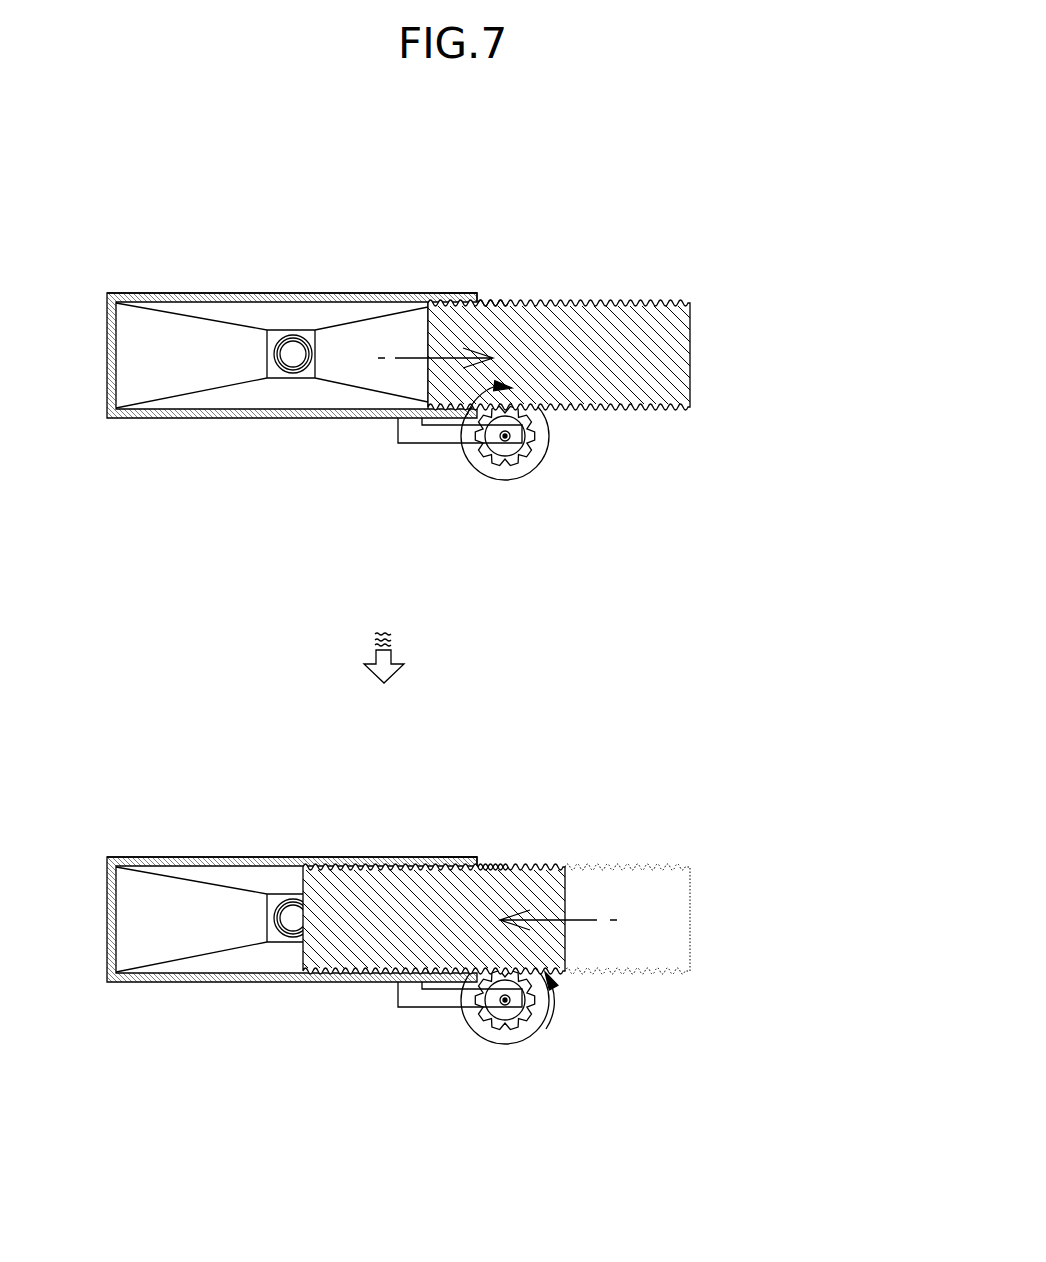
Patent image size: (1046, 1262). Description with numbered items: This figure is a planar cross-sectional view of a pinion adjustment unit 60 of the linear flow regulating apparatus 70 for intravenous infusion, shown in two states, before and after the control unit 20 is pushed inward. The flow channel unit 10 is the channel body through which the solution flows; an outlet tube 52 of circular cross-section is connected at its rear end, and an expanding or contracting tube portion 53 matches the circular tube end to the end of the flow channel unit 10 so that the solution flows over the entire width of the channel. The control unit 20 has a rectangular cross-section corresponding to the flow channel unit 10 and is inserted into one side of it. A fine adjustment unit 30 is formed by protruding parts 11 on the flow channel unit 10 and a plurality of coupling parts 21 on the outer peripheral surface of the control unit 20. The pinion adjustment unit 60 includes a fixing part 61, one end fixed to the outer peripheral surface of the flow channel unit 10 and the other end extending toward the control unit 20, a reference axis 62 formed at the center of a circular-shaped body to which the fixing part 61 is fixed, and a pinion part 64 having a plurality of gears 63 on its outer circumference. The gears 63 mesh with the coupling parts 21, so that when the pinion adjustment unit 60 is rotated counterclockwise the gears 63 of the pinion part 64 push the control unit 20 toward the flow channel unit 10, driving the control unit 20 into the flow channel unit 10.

The flow channel unit 10 is at (292, 576).
The protruding parts 11 is at (420, 296).
The control unit 20 is at (560, 677).
The coupling parts 21 is at (508, 300).
The fine adjustment unit 30 is at (445, 183).
The outlet tube 52 is at (298, 380).
The expanding or contracting tube portion 53 is at (214, 392).
The pinion adjustment unit 60 is at (508, 777).
The fixing part 61 is at (425, 432).
The reference axis 62 is at (532, 452).
The gears 63 is at (550, 438).
The pinion part 64 is at (554, 734).
The linear flow regulating apparatus 70 is at (533, 593).